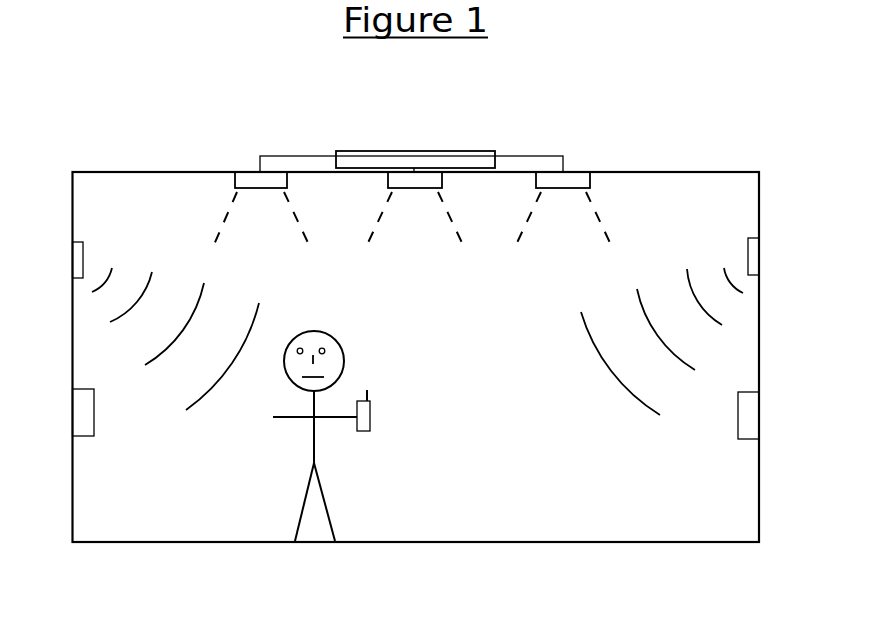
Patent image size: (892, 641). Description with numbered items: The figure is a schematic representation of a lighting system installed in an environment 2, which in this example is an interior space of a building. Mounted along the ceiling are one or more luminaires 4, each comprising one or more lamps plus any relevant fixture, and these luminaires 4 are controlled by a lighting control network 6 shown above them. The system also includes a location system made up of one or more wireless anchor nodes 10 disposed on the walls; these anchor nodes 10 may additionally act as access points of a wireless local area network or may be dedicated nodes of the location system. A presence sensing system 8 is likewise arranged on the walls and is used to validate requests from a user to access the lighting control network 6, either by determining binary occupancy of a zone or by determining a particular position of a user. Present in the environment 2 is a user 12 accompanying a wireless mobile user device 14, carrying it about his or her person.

The environment 2 is at (662, 134).
The luminaire 4 is at (573, 177).
The lighting control network 6 is at (378, 151).
The presence sensing system 8 is at (83, 242).
The wireless anchor node 10 is at (93, 436).
The user 12 is at (344, 349).
The wireless mobile user device 14 is at (370, 413).